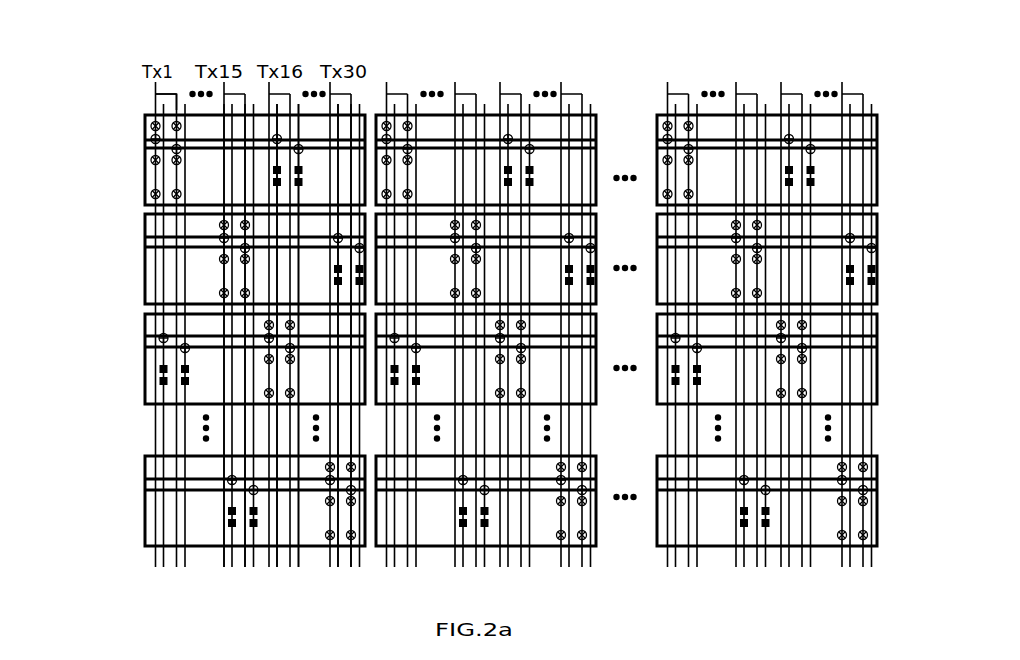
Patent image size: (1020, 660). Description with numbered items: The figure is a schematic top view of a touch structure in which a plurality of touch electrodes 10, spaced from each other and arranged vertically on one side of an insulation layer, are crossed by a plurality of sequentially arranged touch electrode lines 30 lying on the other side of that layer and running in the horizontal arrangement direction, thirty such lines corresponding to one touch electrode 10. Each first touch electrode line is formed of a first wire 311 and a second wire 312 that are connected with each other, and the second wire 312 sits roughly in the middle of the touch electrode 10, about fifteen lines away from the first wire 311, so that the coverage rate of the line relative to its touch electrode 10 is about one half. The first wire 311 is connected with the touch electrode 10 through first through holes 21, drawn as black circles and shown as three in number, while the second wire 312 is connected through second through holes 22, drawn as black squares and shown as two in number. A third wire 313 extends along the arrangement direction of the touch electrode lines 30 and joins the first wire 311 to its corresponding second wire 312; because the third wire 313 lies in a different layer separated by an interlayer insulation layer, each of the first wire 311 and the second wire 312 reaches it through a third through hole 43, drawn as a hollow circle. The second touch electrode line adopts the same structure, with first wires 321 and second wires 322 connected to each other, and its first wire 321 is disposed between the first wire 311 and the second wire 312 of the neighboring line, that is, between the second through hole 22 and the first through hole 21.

The touch electrode 10 is at (600, 120).
The touch electrode line 30 is at (500, 84).
The first wire 311 is at (155, 108).
The second wire 312 is at (297, 280).
The third wire 313 is at (217, 149).
The first wire 321 is at (247, 565).
The second wire 322 is at (351, 566).
The first through hole 21 is at (155, 193).
The second through hole 22 is at (270, 167).
The third through hole 43 is at (153, 142).